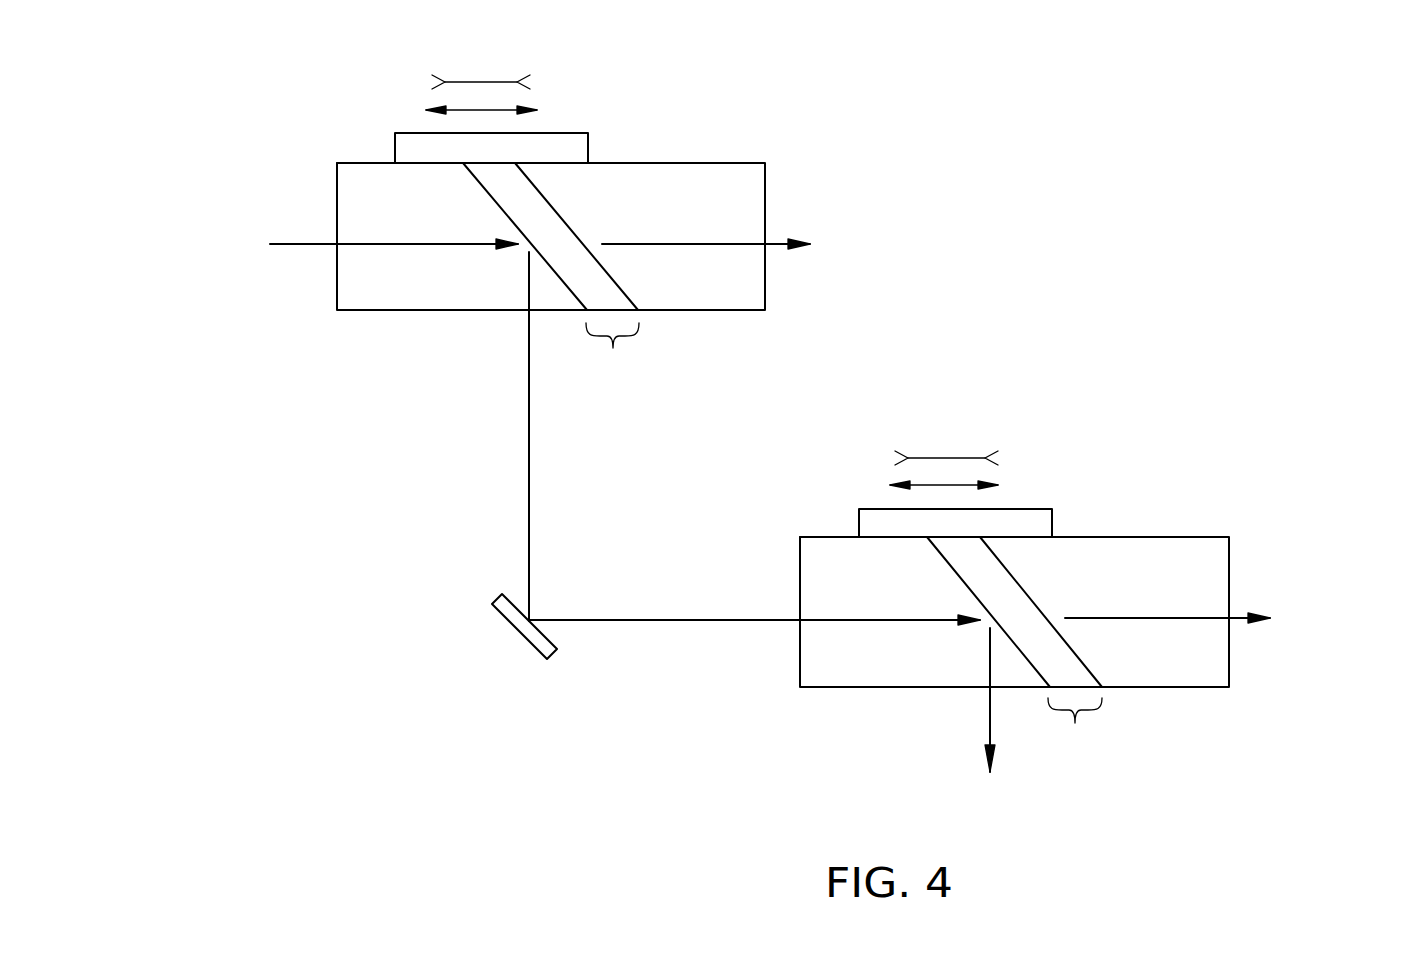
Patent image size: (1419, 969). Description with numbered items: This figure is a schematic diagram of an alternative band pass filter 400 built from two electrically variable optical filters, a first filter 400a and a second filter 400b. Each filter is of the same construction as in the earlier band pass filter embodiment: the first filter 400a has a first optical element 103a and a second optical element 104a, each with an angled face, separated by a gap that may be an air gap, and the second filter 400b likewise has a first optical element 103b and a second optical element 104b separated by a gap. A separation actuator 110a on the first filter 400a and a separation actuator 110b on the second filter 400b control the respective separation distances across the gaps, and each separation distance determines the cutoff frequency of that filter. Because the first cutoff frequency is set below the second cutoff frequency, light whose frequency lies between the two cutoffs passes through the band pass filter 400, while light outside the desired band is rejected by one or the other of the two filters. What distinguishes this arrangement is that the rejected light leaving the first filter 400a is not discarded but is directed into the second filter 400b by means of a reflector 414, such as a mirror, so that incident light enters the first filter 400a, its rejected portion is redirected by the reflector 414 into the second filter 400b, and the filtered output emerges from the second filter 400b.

The band pass filter 400 is at (405, 750).
The first filter 400a is at (962, 132).
The second filter 400b is at (1277, 353).
The first optical element 103a is at (358, 162).
The first optical element 103b is at (822, 537).
The second optical element 104a is at (688, 160).
The second optical element 104b is at (1152, 535).
The separation actuator 110a is at (573, 130).
The separation actuator 110b is at (1037, 507).
The reflector 414 is at (512, 627).